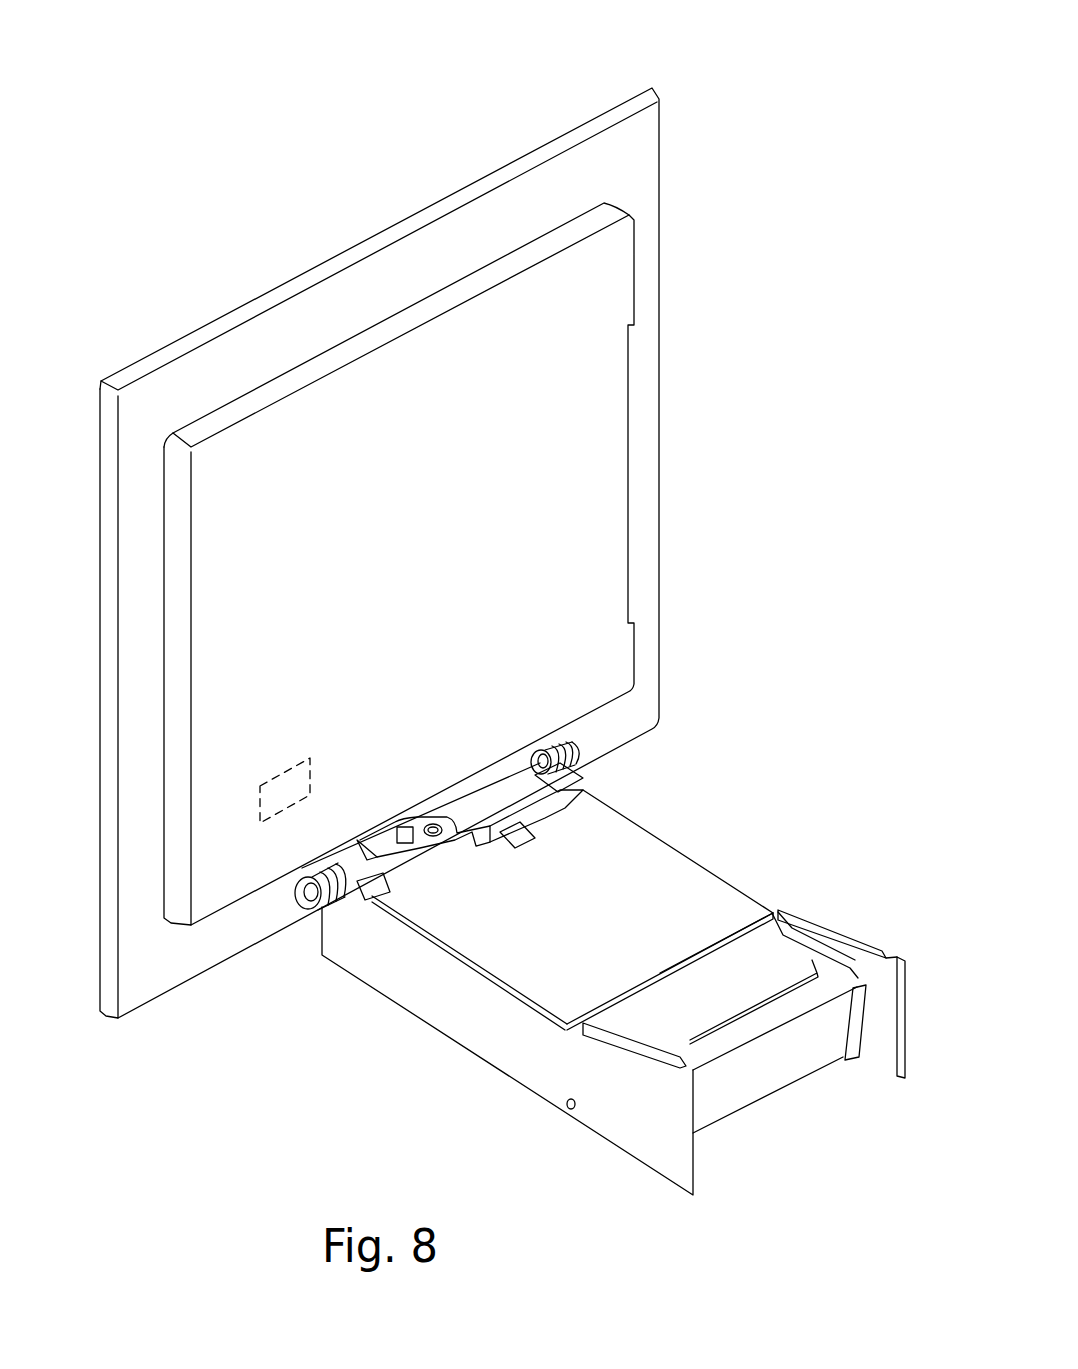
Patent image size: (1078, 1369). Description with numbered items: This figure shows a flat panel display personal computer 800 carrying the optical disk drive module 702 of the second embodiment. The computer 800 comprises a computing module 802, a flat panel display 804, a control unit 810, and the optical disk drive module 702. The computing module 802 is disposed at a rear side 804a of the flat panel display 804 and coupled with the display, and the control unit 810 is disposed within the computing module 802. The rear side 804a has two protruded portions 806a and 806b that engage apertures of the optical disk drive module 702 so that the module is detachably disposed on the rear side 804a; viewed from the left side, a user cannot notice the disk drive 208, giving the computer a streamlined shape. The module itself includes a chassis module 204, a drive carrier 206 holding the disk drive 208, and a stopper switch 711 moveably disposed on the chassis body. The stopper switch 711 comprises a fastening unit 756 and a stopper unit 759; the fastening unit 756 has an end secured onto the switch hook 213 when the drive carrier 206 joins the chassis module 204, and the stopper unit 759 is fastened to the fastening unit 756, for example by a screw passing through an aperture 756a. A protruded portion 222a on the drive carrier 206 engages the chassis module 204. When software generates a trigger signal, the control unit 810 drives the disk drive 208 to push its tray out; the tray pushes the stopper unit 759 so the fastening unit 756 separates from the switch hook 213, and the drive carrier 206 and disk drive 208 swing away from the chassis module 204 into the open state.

The flat panel display personal computer 800 is at (748, 72).
The flat panel display 804 is at (625, 110).
The rear side 804a is at (643, 177).
The computing module 802 is at (553, 243).
The control unit 810 is at (283, 780).
The stopper unit 759 is at (390, 842).
The fastening unit 756 is at (470, 817).
The aperture 756a is at (445, 840).
The protruded portion 806a is at (312, 902).
The protruded portion 806b is at (574, 776).
The switch hook 213 is at (536, 838).
The optical disk drive module 702 is at (706, 862).
The stopper switch 711 is at (435, 845).
The disk drive 208 is at (719, 1072).
The drive carrier 206 is at (858, 1035).
The chassis module 204 is at (888, 957).
The protruded portion 222a is at (567, 1108).